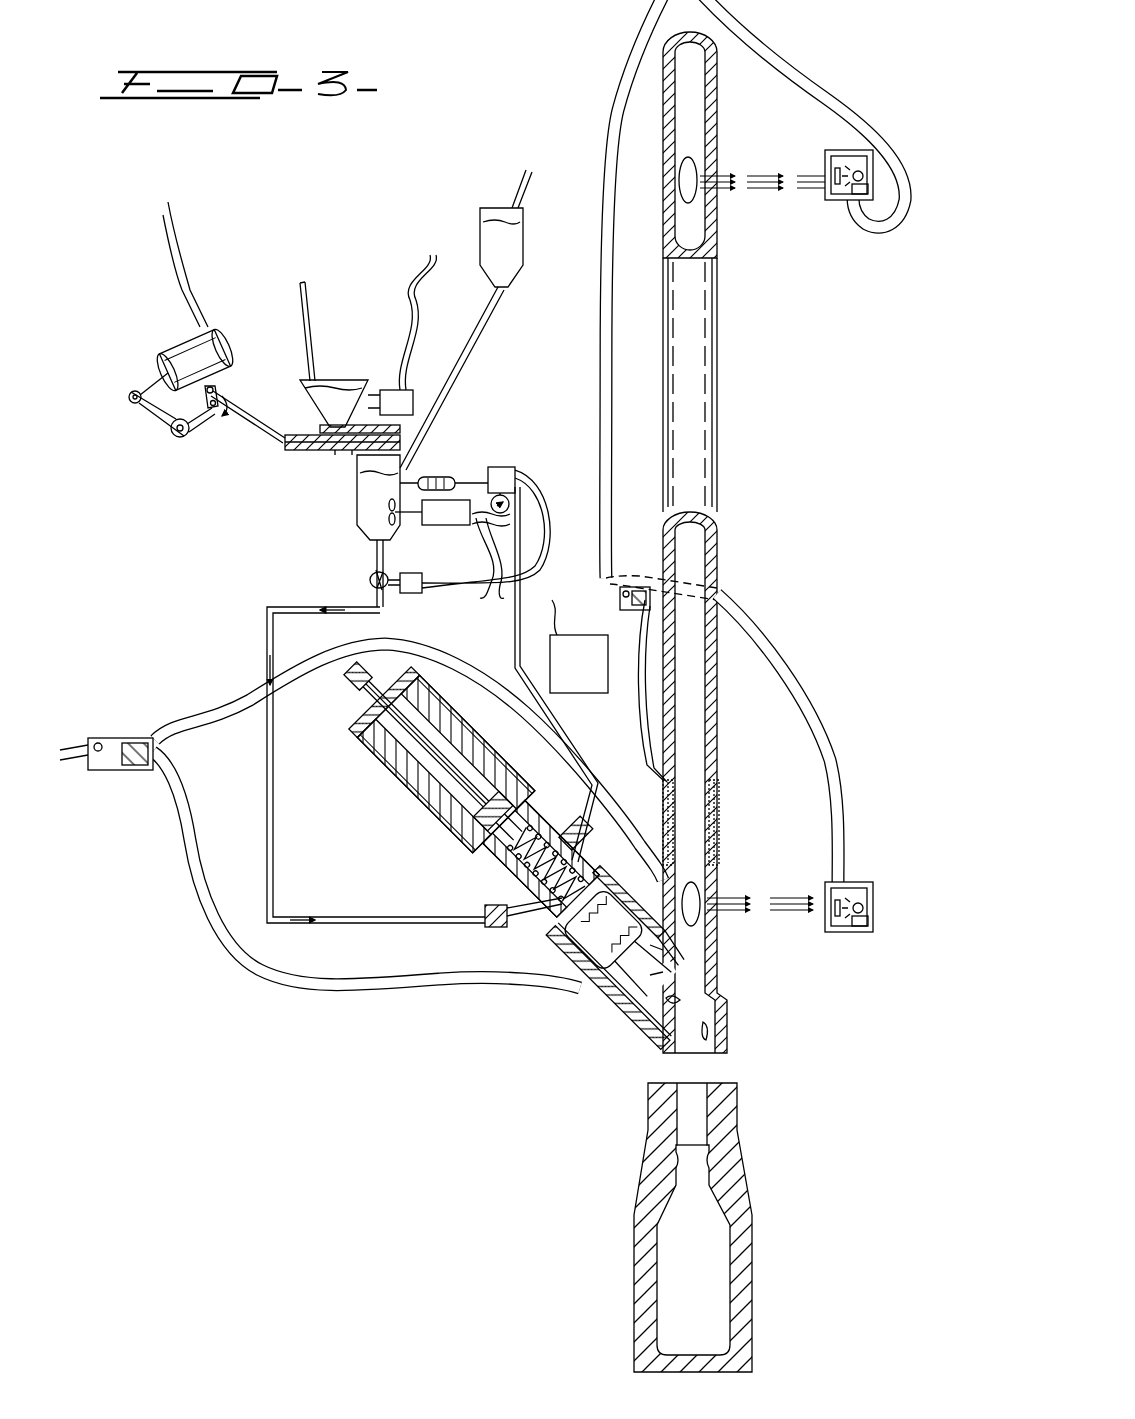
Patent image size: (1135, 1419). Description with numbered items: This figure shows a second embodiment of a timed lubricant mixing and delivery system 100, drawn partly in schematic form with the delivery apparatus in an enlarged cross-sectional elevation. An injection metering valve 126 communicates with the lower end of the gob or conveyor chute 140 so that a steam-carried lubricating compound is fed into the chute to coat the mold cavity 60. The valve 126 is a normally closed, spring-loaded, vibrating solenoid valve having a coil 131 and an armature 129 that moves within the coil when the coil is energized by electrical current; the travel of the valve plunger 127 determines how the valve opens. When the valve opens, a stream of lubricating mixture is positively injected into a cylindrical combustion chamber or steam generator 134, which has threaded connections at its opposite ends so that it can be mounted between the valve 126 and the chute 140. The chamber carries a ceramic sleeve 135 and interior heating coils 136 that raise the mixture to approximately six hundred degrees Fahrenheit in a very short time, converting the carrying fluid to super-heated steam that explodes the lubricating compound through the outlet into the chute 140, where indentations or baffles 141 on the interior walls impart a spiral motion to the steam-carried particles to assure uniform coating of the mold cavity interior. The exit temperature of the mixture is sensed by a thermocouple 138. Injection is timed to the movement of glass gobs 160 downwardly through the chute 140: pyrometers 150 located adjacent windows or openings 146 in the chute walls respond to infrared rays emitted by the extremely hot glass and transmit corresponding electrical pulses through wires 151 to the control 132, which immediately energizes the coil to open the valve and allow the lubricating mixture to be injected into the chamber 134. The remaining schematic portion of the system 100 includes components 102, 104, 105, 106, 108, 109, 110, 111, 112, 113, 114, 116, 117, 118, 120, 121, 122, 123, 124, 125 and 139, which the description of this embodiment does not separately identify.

The mold cavity 60 is at (707, 1218).
The timed lubricant mixing and delivery system 100 is at (275, 538).
The feed mechanism 102 is at (283, 452).
The feed plate 104 is at (305, 432).
The motor 105 is at (185, 355).
The crank lever 106 is at (172, 430).
The crank 108 is at (215, 393).
The connecting rod 109 is at (255, 430).
The hopper 110 is at (340, 385).
The stirring rod 111 is at (308, 300).
The vibrator 112 is at (413, 400).
The feed opening 113 is at (332, 455).
The gate plate 114 is at (400, 430).
The liquid reservoir 116 is at (524, 260).
The feed tube 117 is at (462, 352).
The mixing vessel 118 is at (357, 500).
The mixer motor 120 is at (464, 522).
The recirculation conduit 121 is at (267, 635).
The outlet valve 122 is at (382, 575).
The valve actuator 123 is at (412, 593).
The pressure regulator 124 is at (505, 468).
The control valve 125 is at (440, 478).
The injection metering valve 126 is at (527, 838).
The valve plunger 127 is at (560, 905).
The armature 129 is at (434, 752).
The coil 131 is at (479, 797).
The control 132 is at (583, 690).
The combustion chamber or steam generator 134 is at (609, 986).
The ceramic sleeve 135 is at (585, 965).
The interior heating coils 136 is at (610, 912).
The thermocouple 138 is at (657, 950).
The control box 139 is at (130, 770).
The gob chute 140 is at (712, 748).
The indentations or baffles 141 is at (735, 1018).
The windows or openings 146 is at (720, 190).
The pyrometers 150 is at (838, 200).
The wires 151 is at (795, 40).
The glass gobs 160 is at (692, 175).